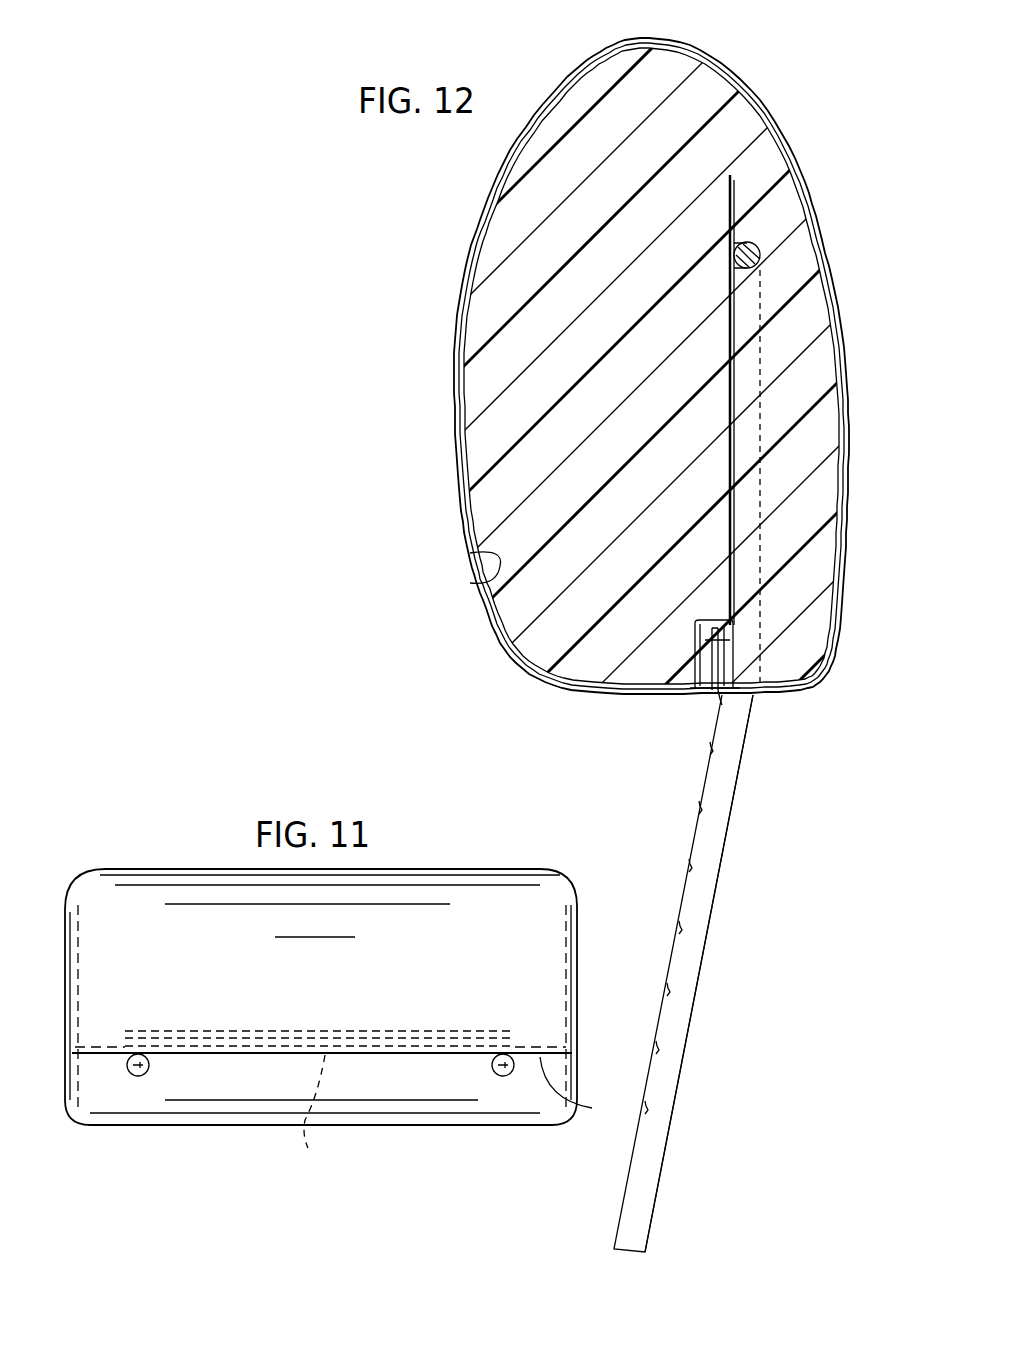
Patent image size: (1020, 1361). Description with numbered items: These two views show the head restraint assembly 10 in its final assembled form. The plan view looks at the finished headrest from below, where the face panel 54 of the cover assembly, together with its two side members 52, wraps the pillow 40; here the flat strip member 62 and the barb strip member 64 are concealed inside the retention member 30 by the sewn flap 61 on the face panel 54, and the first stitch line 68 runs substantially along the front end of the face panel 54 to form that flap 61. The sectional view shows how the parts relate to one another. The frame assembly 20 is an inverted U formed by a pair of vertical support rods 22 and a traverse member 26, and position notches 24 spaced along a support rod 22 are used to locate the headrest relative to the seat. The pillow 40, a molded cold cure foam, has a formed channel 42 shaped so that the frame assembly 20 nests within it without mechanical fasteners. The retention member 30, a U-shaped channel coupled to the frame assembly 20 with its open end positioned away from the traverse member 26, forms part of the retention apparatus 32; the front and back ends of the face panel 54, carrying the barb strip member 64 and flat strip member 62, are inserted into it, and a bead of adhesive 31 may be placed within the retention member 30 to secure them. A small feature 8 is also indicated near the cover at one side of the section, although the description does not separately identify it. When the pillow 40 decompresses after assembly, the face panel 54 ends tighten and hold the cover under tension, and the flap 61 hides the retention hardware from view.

In FIG. 12, the pocket 8 is at (480, 577).
In FIG. 12, the head restraint assembly 10 is at (360, 274).
In FIG. 11, the head restraint assembly 10 is at (102, 830).
In FIG. 12, the frame assembly 20 is at (767, 860).
In FIG. 12, the vertical support rods 22 is at (700, 970).
In FIG. 11, the vertical support rods 22 is at (136, 1076).
In FIG. 12, the position notches 24 is at (708, 746).
In FIG. 12, the traverse member 26 is at (761, 257).
In FIG. 12, the retention member 30 is at (700, 620).
In FIG. 11, the retention member 30 is at (322, 1112).
In FIG. 12, the bead of adhesive 31 is at (740, 637).
In FIG. 12, the retention apparatus 32 is at (683, 646).
In FIG. 12, the pillow 40 is at (480, 378).
In FIG. 12, the formed channel 42 is at (747, 241).
In FIG. 11, the side members 52 is at (58, 1035).
In FIG. 12, the face panel 54 is at (457, 522).
In FIG. 11, the face panel 54 is at (100, 932).
In FIG. 12, the flap 61 is at (722, 703).
In FIG. 11, the flap 61 is at (581, 1092).
In FIG. 12, the flat strip member 62 is at (740, 660).
In FIG. 12, the barb strip member 64 is at (703, 633).
In FIG. 12, the first stitch line 68 is at (718, 697).